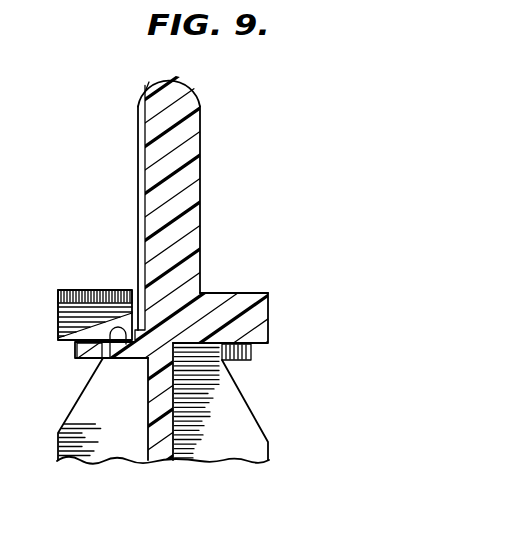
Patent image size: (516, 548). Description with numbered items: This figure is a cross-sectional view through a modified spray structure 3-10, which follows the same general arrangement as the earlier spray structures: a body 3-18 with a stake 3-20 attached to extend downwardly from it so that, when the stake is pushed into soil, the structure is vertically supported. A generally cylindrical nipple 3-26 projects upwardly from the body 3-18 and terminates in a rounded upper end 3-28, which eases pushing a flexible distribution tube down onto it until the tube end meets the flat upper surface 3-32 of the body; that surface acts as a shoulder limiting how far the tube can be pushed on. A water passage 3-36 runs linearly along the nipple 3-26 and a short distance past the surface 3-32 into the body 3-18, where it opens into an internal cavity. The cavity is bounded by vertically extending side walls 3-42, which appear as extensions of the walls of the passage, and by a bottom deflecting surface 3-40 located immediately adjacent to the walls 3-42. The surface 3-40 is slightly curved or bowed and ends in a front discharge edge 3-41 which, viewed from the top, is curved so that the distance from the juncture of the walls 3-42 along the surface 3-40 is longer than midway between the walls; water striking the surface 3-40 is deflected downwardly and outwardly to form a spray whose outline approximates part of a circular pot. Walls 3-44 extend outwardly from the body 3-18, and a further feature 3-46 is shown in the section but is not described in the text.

The spray structure 3-10 is at (212, 104).
The rounded upper end 3-28 is at (165, 77).
The water passage 3-36 is at (138, 170).
The nipple 3-26 is at (185, 186).
The flat upper surface 3-32 is at (212, 291).
The body 3-18 is at (281, 290).
The walls 3-44 is at (57, 299).
The top strip 3-46 is at (102, 289).
The side walls 3-42 is at (57, 327).
The front discharge edge 3-41 is at (76, 352).
The deflecting surface 3-40 is at (110, 358).
The stake 3-20 is at (120, 440).